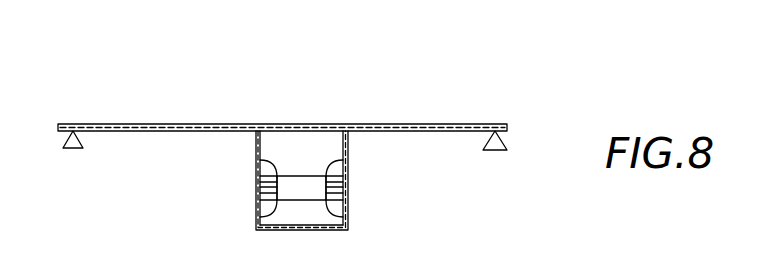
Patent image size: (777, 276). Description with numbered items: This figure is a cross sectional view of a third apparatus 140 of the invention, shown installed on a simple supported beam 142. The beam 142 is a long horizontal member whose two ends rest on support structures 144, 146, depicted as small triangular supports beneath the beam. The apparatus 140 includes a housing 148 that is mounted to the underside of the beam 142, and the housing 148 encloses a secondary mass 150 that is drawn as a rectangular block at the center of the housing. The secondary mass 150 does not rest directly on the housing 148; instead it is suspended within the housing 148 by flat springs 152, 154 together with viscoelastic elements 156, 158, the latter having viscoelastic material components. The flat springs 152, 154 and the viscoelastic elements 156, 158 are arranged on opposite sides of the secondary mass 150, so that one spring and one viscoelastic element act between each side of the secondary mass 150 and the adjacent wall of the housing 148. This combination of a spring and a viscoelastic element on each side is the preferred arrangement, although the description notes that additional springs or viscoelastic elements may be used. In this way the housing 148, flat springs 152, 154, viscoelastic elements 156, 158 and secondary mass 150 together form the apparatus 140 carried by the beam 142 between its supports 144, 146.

The apparatus 140 is at (402, 206).
The beam 142 is at (443, 123).
The support structure 144 is at (78, 146).
The support structure 146 is at (503, 142).
The housing 148 is at (303, 230).
The secondary mass 150 is at (284, 200).
The flat spring 152 is at (258, 159).
The flat spring 154 is at (348, 160).
The viscoelastic element 156 is at (262, 214).
The viscoelastic element 158 is at (350, 223).